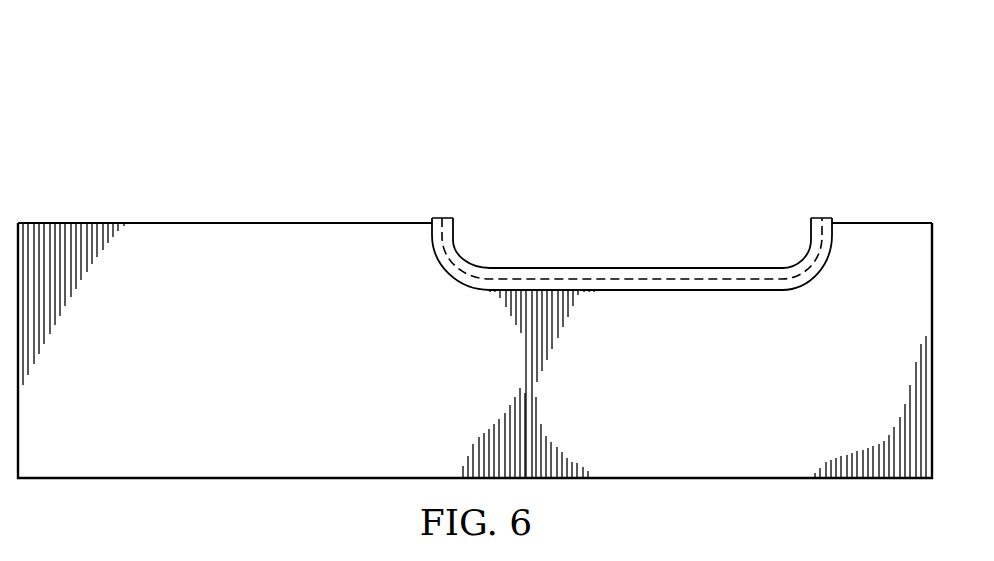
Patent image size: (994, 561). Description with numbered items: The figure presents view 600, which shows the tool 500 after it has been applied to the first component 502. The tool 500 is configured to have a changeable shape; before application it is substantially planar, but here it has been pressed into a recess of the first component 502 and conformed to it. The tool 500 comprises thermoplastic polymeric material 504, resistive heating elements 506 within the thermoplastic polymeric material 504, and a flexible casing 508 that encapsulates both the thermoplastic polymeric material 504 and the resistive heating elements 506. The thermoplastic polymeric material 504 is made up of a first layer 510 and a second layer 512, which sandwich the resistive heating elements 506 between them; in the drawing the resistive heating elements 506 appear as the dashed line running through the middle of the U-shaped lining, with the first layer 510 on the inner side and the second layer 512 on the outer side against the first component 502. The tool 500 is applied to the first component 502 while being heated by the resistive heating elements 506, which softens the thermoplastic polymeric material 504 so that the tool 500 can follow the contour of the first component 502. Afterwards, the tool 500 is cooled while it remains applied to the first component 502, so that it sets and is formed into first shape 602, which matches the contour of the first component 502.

The view 600 is at (321, 103).
The first shape 602 is at (434, 192).
The tool 500 is at (825, 201).
The first component 502 is at (173, 217).
The thermoplastic polymeric material 504 is at (583, 270).
The resistive heating elements 506 is at (517, 275).
The flexible casing 508 is at (742, 268).
The first layer 510 is at (670, 272).
The second layer 512 is at (655, 284).